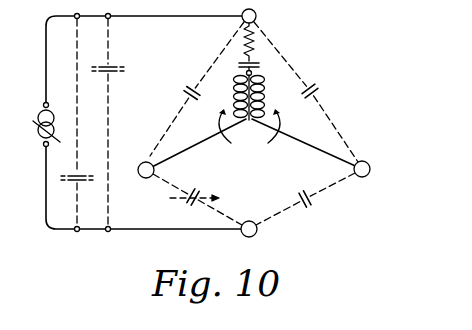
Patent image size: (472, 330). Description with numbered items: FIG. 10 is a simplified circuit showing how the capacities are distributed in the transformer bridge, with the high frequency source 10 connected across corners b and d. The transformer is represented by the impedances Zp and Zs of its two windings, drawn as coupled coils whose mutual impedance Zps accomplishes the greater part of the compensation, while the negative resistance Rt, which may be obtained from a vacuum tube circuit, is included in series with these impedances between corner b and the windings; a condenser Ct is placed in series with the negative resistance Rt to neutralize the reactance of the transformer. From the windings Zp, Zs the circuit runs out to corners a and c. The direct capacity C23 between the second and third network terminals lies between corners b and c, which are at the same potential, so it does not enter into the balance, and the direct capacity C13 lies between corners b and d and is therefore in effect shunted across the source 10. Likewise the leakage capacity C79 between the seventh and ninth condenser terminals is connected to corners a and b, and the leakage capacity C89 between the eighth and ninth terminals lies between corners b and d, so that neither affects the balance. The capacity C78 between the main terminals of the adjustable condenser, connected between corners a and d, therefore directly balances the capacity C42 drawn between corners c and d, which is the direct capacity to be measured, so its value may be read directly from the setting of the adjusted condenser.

The alternating current source 10 is at (38, 129).
The direct capacity between terminals one and three C13 is at (120, 73).
The leakage capacity between terminals eight and nine C89 is at (83, 168).
The leakage capacity between terminals seven and nine C79 is at (185, 84).
The direct capacity between terminals two and three C23 is at (318, 82).
The capacity between the main terminals of the adjustable condenser C78 is at (200, 192).
The capacitor between terminals 4 and 2 C42 is at (288, 193).
The negative resistance Rt is at (238, 52).
The condenser Ct is at (258, 64).
The impedance of the transformer primary winding Zp is at (234, 101).
The impedance of the transformer secondary winding Zs is at (263, 100).
The mutual impedance between primary and secondary Zps is at (249, 133).
The bridge corner a is at (146, 170).
The bridge corner b is at (249, 16).
The bridge corner c is at (362, 169).
The bridge corner d is at (249, 229).